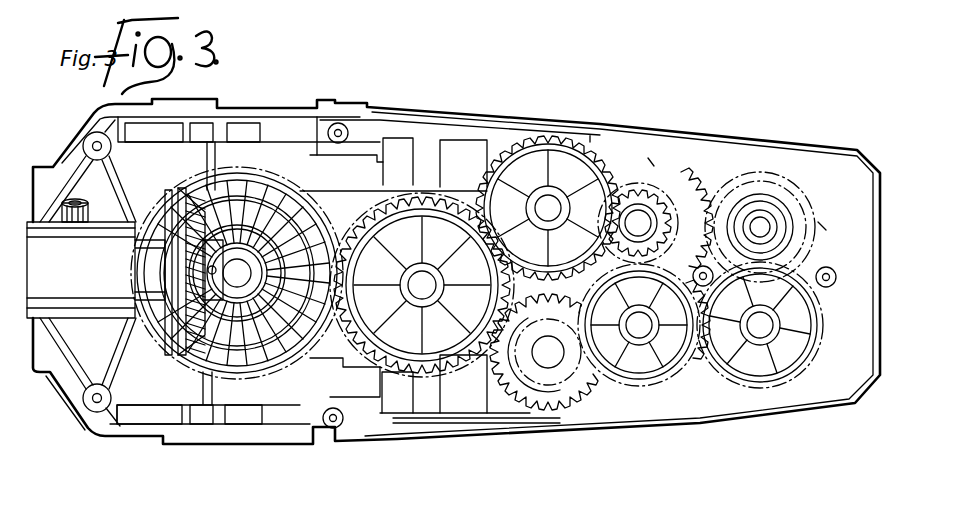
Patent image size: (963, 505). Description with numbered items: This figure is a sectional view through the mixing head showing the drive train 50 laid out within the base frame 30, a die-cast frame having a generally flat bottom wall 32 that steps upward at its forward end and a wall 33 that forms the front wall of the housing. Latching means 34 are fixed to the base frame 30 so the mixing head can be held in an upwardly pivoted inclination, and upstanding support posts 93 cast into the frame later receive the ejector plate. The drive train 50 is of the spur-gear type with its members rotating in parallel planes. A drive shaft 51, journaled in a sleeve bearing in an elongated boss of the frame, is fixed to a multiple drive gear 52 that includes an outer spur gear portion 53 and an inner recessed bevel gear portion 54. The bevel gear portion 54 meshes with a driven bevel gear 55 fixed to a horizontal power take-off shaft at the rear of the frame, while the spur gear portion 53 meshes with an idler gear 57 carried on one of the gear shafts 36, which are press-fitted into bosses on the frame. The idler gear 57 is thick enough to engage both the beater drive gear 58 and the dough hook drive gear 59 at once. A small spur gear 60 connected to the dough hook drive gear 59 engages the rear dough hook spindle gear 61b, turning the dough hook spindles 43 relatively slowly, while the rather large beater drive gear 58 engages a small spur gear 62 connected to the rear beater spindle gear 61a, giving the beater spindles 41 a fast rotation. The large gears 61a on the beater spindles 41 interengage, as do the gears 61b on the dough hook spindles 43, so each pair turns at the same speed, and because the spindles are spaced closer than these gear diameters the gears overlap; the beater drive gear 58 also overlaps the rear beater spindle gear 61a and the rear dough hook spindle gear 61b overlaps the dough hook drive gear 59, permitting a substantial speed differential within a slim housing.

The base frame 30 is at (598, 430).
The bottom wall 32 is at (660, 430).
The wall 33 is at (884, 190).
The latching means 34 is at (390, 140).
The gear shafts 36 is at (430, 288).
The beater spindles 41 is at (732, 180).
The dough hook spindles 43 is at (688, 360).
The drive train 50 is at (476, 158).
The drive shaft 51 is at (235, 287).
The multiple drive gear 52 is at (268, 360).
The spur gear portion 53 is at (345, 233).
The bevel gear portion 54 is at (275, 223).
The driven bevel gear 55 is at (186, 214).
The idler gear 57 is at (462, 372).
The beater drive gear 58 is at (598, 170).
The dough hook drive gear 59 is at (500, 380).
The small spur gear 60 is at (548, 362).
The beater spindle gears 61a is at (650, 160).
The dough hook spindle gears 61b is at (690, 410).
The small spur gear 62 is at (655, 218).
The support posts 93 is at (831, 271).